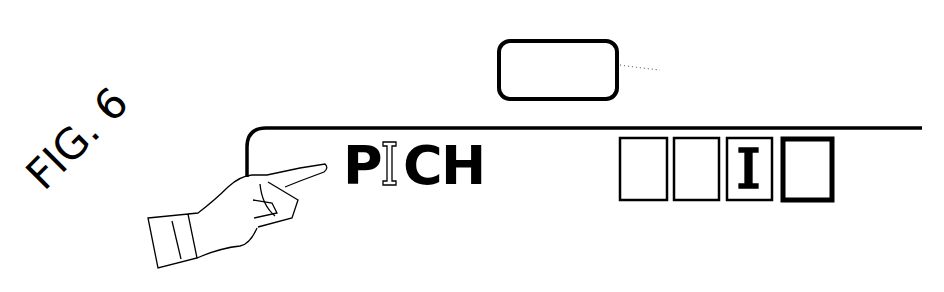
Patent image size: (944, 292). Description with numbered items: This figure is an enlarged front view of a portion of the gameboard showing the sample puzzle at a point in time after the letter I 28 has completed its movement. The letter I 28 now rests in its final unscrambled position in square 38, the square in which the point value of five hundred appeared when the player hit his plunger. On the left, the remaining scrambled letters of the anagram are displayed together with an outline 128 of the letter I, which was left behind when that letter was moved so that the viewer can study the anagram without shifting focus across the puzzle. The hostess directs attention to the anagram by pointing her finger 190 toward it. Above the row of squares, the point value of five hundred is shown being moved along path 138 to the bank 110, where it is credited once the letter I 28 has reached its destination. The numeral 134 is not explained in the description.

The bank 110 is at (498, 50).
The path 138 is at (630, 63).
The numeric display 500 134 is at (720, 80).
The outline 128 is at (387, 146).
The finger 190 is at (280, 189).
The square 38 is at (764, 137).
The letter I 28 is at (753, 188).